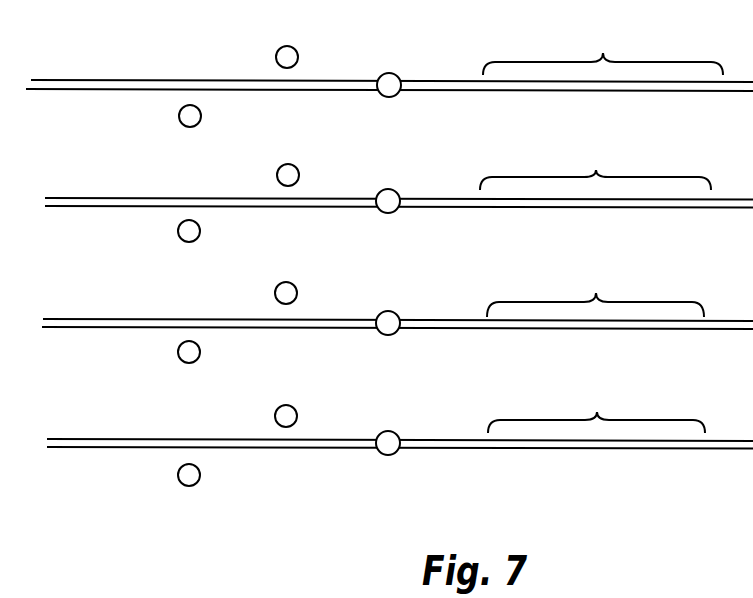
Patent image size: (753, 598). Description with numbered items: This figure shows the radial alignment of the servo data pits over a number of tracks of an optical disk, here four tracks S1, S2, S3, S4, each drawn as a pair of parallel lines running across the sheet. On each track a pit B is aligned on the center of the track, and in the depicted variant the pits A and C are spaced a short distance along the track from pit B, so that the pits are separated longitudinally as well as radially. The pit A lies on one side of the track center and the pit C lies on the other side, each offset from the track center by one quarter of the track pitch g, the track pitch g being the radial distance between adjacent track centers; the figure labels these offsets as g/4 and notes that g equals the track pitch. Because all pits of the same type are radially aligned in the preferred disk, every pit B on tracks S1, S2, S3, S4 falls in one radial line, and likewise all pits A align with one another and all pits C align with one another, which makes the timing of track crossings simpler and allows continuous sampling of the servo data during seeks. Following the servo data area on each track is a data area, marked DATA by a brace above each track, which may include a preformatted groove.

The track S1 is at (389, 73).
The track S2 is at (399, 189).
The track S3 is at (397, 310).
The track S4 is at (400, 430).
The pit A is at (296, 221).
The trailing pit B is at (396, 264).
The pit C is at (188, 300).
The data area DATA is at (601, 228).
The track pitch g is at (435, 278).